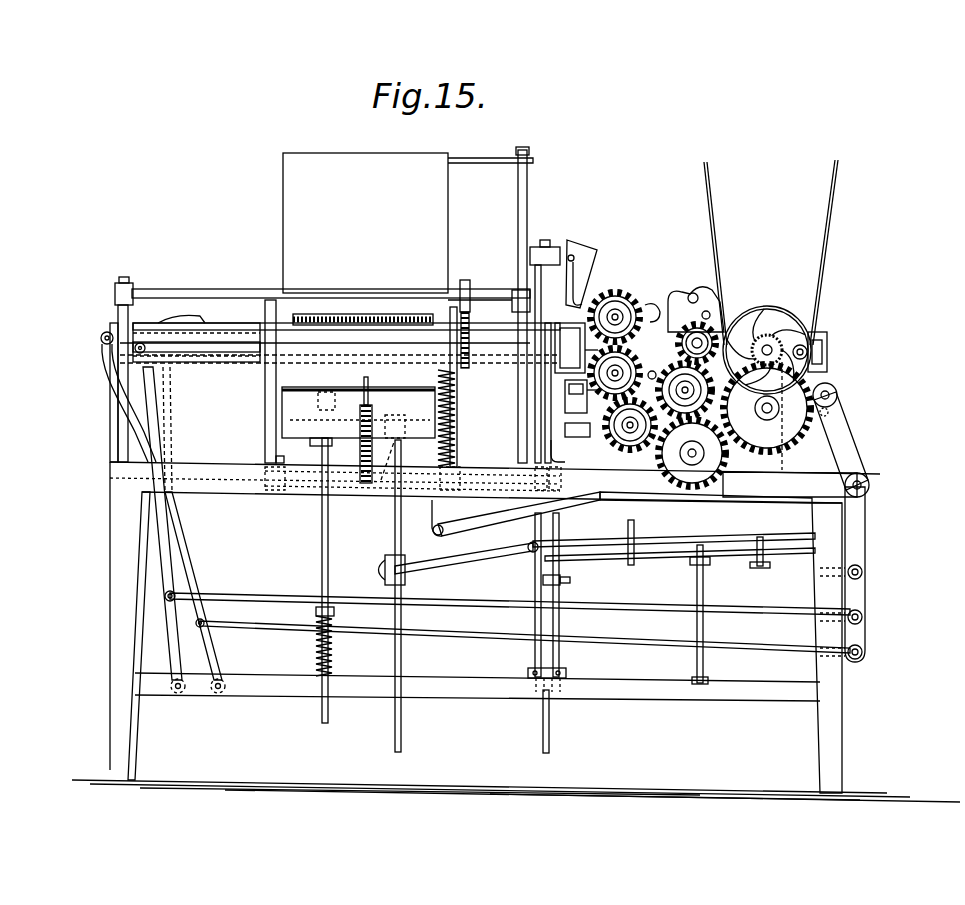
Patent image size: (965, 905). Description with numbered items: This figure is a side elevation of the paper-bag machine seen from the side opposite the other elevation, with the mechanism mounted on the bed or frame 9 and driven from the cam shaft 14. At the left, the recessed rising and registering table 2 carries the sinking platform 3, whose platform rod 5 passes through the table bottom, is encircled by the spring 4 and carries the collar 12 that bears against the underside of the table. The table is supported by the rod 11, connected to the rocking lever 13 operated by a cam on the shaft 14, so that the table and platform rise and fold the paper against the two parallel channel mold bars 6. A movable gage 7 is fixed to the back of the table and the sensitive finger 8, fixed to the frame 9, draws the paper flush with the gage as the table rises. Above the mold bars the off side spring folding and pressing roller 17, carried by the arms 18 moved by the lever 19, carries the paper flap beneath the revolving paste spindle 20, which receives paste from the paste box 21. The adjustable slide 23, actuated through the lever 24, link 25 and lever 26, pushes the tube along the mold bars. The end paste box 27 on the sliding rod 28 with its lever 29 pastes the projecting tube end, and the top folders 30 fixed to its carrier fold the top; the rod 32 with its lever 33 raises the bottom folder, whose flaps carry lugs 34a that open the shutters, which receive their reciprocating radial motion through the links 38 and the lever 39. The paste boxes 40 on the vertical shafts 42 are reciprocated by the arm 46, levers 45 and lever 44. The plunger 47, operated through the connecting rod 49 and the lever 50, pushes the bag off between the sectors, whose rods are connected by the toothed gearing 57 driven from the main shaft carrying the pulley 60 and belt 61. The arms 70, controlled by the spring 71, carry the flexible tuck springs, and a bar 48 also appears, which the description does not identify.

The rising and registering table 2 is at (292, 418).
The sinking platform 3 is at (380, 482).
The spring 4 is at (340, 658).
The platform rod 5 is at (330, 556).
The channel mold bars 6 is at (138, 323).
The movable gage 7 is at (305, 395).
The sensitive finger 8 is at (366, 402).
The bed or frame 9 is at (203, 452).
The rod 11 is at (402, 646).
The collar 12 is at (272, 497).
The rocking lever 13 is at (490, 567).
The shaft 14 is at (773, 410).
The off side spring folding and pressing roller 17 is at (343, 318).
The arms 18 is at (257, 322).
The lever 19 is at (510, 521).
The revolving paste spindle 20 is at (237, 290).
The paste box 21 is at (318, 206).
The adjustable slide 23 is at (235, 323).
The lever 24 is at (102, 350).
The link 25 is at (302, 628).
The lever 26 is at (862, 634).
The end paste box 27 is at (598, 254).
The sliding rod 28 is at (543, 241).
The lever 29 is at (880, 536).
The top folders 30 is at (572, 283).
The rod 32 is at (550, 720).
The lever 33 is at (613, 536).
The lugs 34a is at (562, 431).
The links 38 is at (746, 576).
The lever 39 is at (856, 552).
The paste boxes 40 is at (560, 411).
The vertical shafts 42 is at (700, 623).
The lever 44 is at (765, 553).
The levers 45 is at (632, 527).
The arm 46 is at (680, 570).
The plunger 47 is at (310, 347).
The bar 48 is at (150, 389).
The connecting rod 49 is at (273, 592).
The lever 50 is at (858, 593).
The toothed gearing 57 is at (640, 314).
The pulley 60 is at (775, 298).
The belt 61 is at (824, 236).
The arms 70 is at (570, 348).
The spring 71 is at (832, 357).